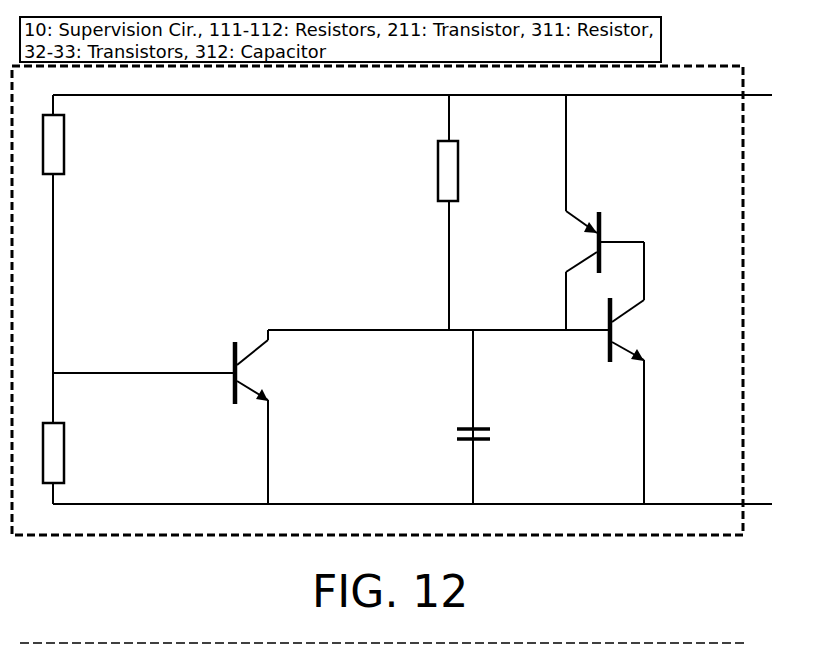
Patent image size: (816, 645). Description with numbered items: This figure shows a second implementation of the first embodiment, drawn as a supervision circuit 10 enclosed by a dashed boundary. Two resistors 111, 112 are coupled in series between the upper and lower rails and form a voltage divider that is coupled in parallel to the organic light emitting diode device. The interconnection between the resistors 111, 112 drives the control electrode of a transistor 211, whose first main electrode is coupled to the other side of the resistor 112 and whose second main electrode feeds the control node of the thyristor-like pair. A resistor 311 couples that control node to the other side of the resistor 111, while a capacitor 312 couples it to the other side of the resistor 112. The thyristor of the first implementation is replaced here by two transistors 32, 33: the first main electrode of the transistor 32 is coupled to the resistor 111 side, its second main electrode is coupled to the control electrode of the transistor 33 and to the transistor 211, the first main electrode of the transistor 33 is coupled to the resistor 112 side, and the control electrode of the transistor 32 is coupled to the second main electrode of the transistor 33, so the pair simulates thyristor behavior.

The supervision circuit 10 is at (665, 537).
The resistor 111 is at (66, 146).
The resistor 112 is at (66, 451).
The transistor 211 is at (255, 371).
The resistor 311 is at (460, 173).
The transistor 32 is at (578, 243).
The transistor 33 is at (630, 330).
The capacitor 312 is at (492, 437).